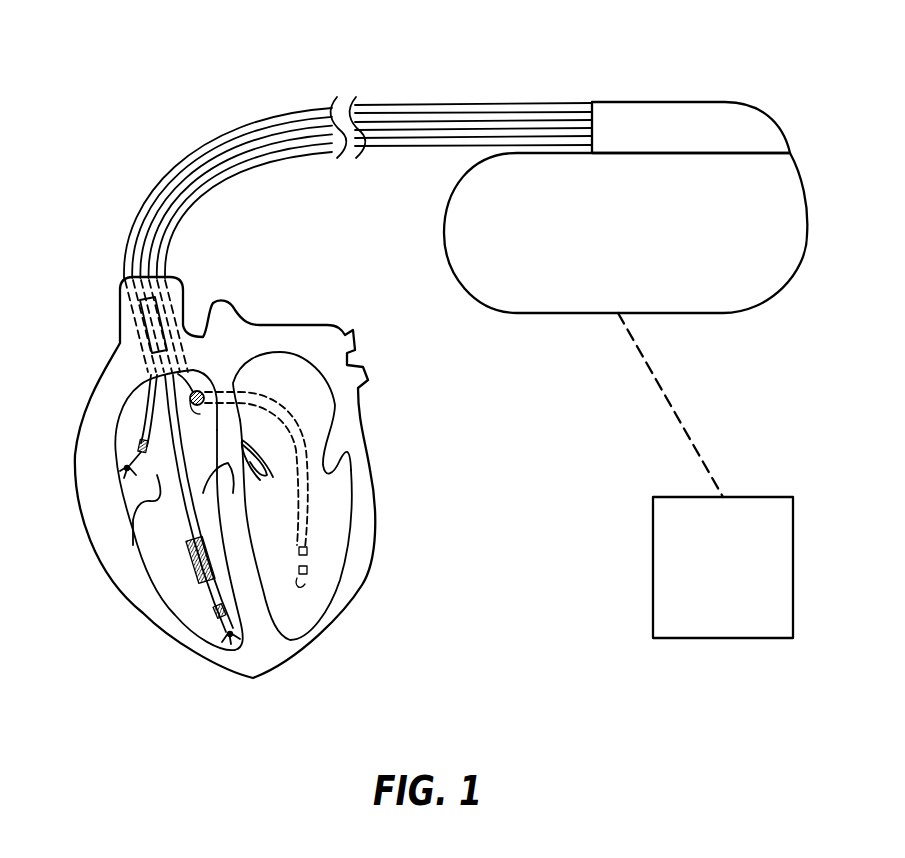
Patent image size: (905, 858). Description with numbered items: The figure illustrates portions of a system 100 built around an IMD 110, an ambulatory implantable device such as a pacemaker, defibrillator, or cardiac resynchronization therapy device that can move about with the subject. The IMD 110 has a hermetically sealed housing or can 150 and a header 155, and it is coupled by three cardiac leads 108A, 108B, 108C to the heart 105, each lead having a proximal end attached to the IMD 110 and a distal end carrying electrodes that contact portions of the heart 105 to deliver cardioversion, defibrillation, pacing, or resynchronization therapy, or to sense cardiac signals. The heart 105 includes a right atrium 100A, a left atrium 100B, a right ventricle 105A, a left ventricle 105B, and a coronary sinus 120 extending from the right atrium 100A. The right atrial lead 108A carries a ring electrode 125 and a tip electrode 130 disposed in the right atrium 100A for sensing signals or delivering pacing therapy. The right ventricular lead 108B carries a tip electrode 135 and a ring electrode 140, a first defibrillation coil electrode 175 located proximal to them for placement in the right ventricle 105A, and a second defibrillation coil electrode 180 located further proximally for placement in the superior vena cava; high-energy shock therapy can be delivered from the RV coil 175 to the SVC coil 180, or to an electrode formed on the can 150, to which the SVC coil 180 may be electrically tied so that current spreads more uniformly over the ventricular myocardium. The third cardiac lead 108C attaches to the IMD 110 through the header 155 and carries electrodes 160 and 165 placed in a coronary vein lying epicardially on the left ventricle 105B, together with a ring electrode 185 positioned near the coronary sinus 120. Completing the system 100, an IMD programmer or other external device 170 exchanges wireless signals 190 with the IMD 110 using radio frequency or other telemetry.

The system 100 is at (108, 42).
The heart 105 is at (373, 462).
The right atrium 100A is at (160, 527).
The left atrium 100B is at (295, 370).
The right ventricle 105A is at (160, 527).
The left ventricle 105B is at (305, 612).
The right atrial lead 108A is at (263, 115).
The right ventricular lead 108B is at (208, 153).
The third cardiac lead 108C is at (233, 173).
The IMD 110 is at (698, 82).
The coronary sinus 120 is at (197, 406).
The ring electrode 125 is at (138, 441).
The tip electrode 130 is at (157, 475).
The tip electrode 135 is at (227, 637).
The ring electrode 140 is at (217, 613).
The IMD housing (can) 150 is at (808, 216).
The header 155 is at (769, 114).
The electrode 160 is at (308, 548).
The electrode 165 is at (308, 570).
The external device 170 is at (723, 638).
The first defibrillation coil electrode 175 is at (193, 573).
The second defibrillation coil electrode 180 is at (147, 327).
The ring electrode 185 is at (193, 391).
The wireless signals 190 is at (672, 405).